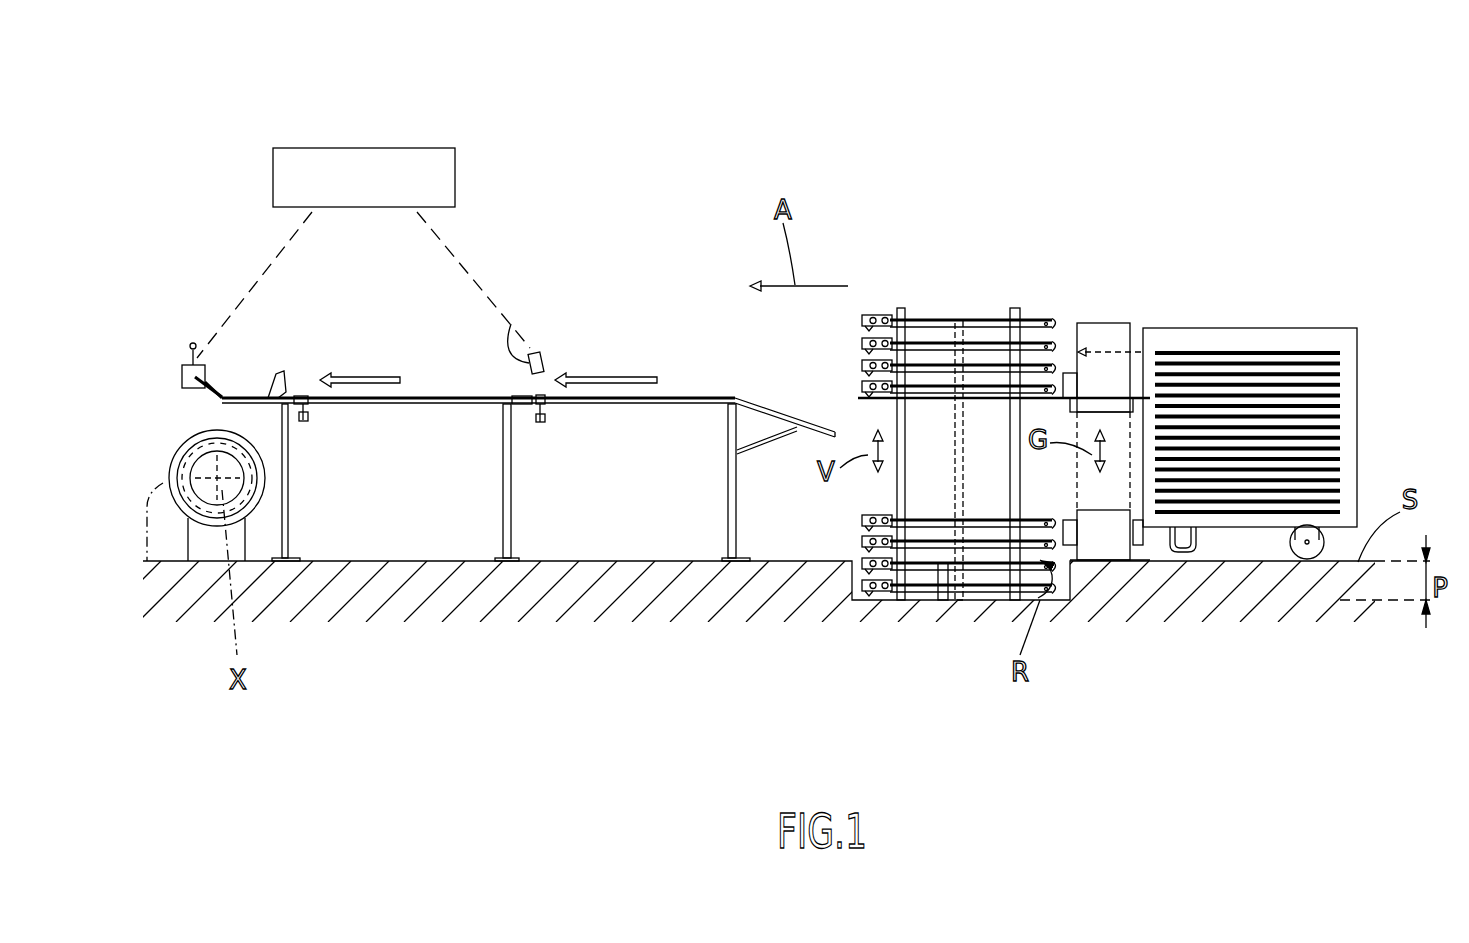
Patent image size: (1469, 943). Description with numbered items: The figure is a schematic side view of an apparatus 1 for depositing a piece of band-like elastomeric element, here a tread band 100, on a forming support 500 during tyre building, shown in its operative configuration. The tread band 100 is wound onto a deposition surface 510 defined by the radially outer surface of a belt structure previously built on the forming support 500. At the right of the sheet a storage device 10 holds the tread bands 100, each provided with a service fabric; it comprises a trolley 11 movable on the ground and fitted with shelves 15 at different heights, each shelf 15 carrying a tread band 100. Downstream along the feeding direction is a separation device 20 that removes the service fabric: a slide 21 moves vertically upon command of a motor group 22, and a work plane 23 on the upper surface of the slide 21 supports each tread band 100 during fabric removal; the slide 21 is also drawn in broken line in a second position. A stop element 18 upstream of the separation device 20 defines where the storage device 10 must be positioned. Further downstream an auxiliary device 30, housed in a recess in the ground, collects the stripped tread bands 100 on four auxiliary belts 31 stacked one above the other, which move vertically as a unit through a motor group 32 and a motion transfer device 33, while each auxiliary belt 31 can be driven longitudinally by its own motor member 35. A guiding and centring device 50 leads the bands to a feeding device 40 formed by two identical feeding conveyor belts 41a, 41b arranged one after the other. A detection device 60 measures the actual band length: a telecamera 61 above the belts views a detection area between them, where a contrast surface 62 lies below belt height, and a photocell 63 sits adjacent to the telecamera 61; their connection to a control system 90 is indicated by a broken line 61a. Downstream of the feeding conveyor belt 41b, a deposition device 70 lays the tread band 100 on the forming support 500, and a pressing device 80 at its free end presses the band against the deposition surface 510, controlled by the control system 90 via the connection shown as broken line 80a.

The apparatus 1 is at (1046, 60).
The storage device 10 is at (1295, 246).
The trolley 11 is at (1352, 408).
The shelves 15 is at (1285, 349).
The stop element 18 is at (1152, 545).
The separation device 20 is at (1089, 260).
The slide 21 is at (1128, 322).
The motor group 22 is at (1093, 565).
The work plane 23 is at (1083, 350).
The auxiliary device 30 is at (953, 246).
The auxiliary belts 31 is at (933, 310).
The motor group 32 is at (930, 566).
The motion transfer device 33 is at (965, 455).
The motor member 35 is at (877, 308).
The feeding device 40 is at (619, 271).
The feeding conveyor belt 41a is at (685, 397).
The feeding conveyor belt 41b is at (399, 379).
The guiding and centring device 50 is at (771, 384).
The detection device 60 is at (491, 363).
The telecamera 61 is at (541, 350).
The broken line 61a is at (465, 248).
The contrast surface 62 is at (529, 426).
The photocell 63 is at (511, 322).
The deposition device 70 is at (241, 376).
The pressing device 80 is at (188, 328).
The broken line 80a is at (270, 255).
The control system 90 is at (338, 178).
The tread band 100 is at (992, 310).
The forming support 500 is at (183, 428).
The deposition surface 510 is at (150, 561).